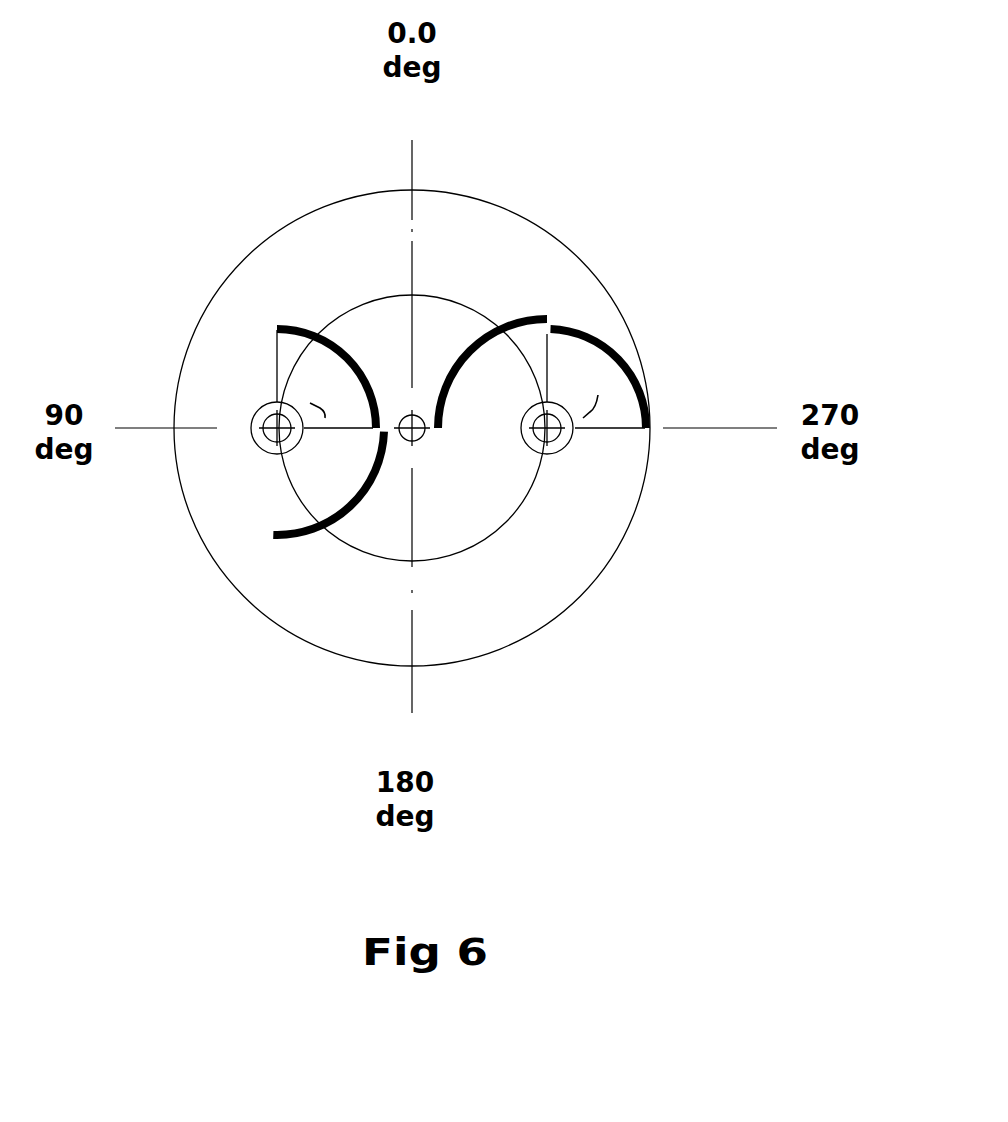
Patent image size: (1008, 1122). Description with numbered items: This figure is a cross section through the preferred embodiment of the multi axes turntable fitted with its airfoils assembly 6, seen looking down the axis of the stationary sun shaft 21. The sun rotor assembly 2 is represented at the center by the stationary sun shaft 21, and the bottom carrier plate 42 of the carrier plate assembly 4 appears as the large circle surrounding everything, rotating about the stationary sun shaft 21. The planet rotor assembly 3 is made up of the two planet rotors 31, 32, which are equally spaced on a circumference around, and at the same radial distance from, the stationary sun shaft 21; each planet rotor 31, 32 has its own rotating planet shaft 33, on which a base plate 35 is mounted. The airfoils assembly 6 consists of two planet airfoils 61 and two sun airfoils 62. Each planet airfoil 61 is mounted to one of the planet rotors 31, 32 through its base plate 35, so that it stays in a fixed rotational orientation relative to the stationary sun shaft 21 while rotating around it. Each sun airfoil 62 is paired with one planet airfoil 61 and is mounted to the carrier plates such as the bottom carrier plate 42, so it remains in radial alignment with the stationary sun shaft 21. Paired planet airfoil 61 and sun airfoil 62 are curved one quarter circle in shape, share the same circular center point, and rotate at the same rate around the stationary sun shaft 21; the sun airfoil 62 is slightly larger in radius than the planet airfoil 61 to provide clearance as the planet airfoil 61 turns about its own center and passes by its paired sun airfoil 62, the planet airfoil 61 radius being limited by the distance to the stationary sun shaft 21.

The sun rotor assembly 2 is at (582, 342).
The planet rotor assembly 3 is at (582, 345).
The carrier plate assembly 4 is at (582, 345).
The airfoils assembly 6 is at (745, 223).
The stationary sun shaft 21 is at (413, 413).
The planet rotor 31 is at (550, 440).
The planet rotor 32 is at (305, 433).
The rotating planet shaft 33 is at (371, 573).
The base plate 35 is at (317, 413).
The bottom carrier plate 42 is at (213, 296).
The planet airfoil 61 is at (292, 330).
The sun airfoil 62 is at (298, 538).